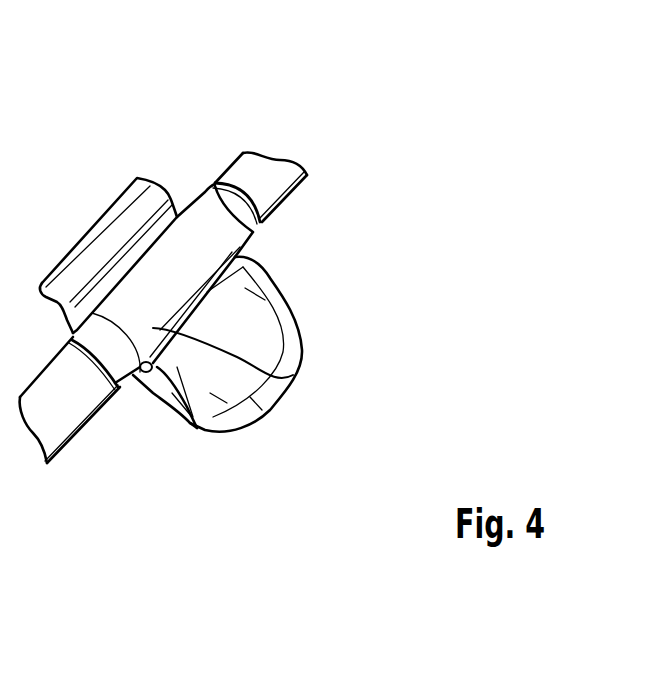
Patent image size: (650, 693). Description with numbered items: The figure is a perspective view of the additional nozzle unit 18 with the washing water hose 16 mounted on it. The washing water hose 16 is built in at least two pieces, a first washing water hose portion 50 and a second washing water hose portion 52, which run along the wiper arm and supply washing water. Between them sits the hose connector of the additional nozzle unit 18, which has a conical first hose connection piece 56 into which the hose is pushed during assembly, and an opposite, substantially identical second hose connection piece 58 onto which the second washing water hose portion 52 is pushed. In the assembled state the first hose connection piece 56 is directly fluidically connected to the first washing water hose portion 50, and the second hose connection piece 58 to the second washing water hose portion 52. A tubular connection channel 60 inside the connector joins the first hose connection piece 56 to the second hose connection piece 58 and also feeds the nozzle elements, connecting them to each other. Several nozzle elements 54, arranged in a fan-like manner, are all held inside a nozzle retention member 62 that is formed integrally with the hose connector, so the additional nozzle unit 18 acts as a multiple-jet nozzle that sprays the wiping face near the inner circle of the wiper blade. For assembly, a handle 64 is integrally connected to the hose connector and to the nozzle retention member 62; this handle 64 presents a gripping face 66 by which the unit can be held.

The washing water hose 16 is at (178, 124).
The additional nozzle unit 18 is at (299, 351).
The first washing water hose portion 50 is at (67, 410).
The second washing water hose portion 52 is at (268, 188).
The nozzle element 54 is at (186, 418).
The first hose connection piece 56 is at (117, 387).
The second hose connection piece 58 is at (262, 216).
The connection channel 60 is at (232, 373).
The nozzle retention member 62 is at (167, 400).
The handle 64 is at (312, 347).
The gripping face 66 is at (235, 374).